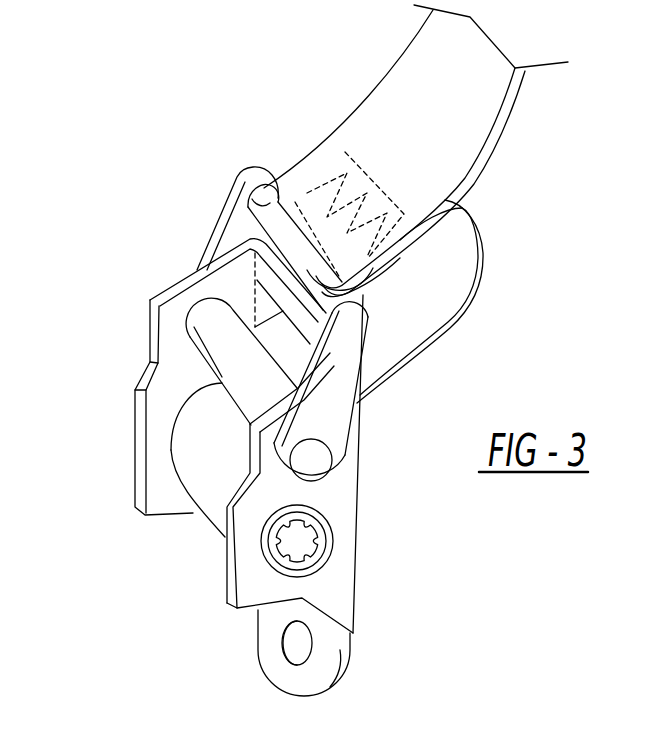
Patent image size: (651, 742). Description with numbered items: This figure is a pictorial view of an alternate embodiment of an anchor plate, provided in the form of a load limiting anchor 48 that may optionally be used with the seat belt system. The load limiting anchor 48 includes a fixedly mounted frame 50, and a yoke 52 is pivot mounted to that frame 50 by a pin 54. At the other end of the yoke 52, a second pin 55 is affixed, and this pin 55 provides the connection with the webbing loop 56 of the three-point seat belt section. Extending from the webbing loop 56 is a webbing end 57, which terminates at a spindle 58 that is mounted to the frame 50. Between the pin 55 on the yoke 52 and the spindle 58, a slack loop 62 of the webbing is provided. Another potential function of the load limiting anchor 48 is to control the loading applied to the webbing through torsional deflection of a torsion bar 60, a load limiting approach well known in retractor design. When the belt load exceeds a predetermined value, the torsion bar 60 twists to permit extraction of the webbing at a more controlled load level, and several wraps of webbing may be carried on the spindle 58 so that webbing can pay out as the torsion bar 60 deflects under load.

The load limiting anchor 48 is at (176, 205).
The frame 50 is at (335, 588).
The yoke 52 is at (343, 378).
The pin 54 is at (320, 465).
The pin 55 is at (268, 185).
The webbing loop 56 is at (340, 259).
The webbing end 57 is at (197, 443).
The spindle 58 is at (228, 487).
The torsion bar 60 is at (307, 543).
The slack loop 62 is at (480, 293).